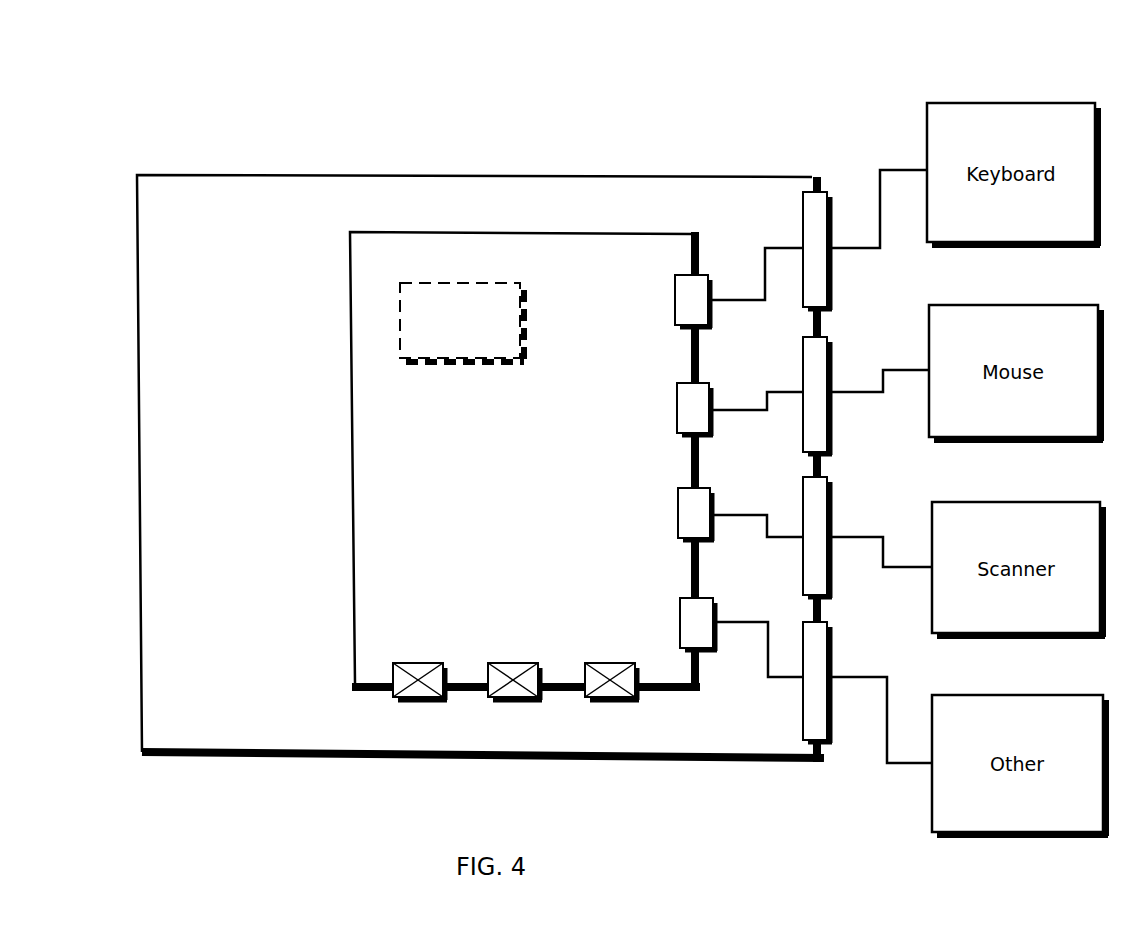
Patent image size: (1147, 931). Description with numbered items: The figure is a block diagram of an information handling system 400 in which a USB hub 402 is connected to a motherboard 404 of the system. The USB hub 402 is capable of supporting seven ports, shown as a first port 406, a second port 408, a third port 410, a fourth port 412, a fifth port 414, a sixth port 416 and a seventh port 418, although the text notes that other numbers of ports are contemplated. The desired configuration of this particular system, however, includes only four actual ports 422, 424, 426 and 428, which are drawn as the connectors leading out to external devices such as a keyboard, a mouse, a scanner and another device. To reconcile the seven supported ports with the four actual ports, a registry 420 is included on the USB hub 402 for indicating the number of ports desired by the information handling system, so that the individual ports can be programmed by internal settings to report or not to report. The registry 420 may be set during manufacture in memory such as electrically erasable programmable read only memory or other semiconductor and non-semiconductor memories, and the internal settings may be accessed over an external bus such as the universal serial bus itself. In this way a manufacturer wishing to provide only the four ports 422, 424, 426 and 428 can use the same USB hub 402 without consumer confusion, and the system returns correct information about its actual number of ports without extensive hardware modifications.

The computer system 400 is at (127, 82).
The USB hub 402 is at (352, 568).
The motherboard 404 is at (140, 683).
The first port 406 is at (674, 287).
The second port 408 is at (676, 389).
The third port 410 is at (678, 497).
The fourth port 412 is at (680, 605).
The fifth port 414 is at (607, 662).
The sixth port 416 is at (512, 662).
The seventh port 418 is at (417, 662).
The registry 420 is at (429, 283).
The actual port 422 is at (828, 271).
The actual port 424 is at (830, 416).
The actual port 426 is at (830, 556).
The actual port 428 is at (833, 698).